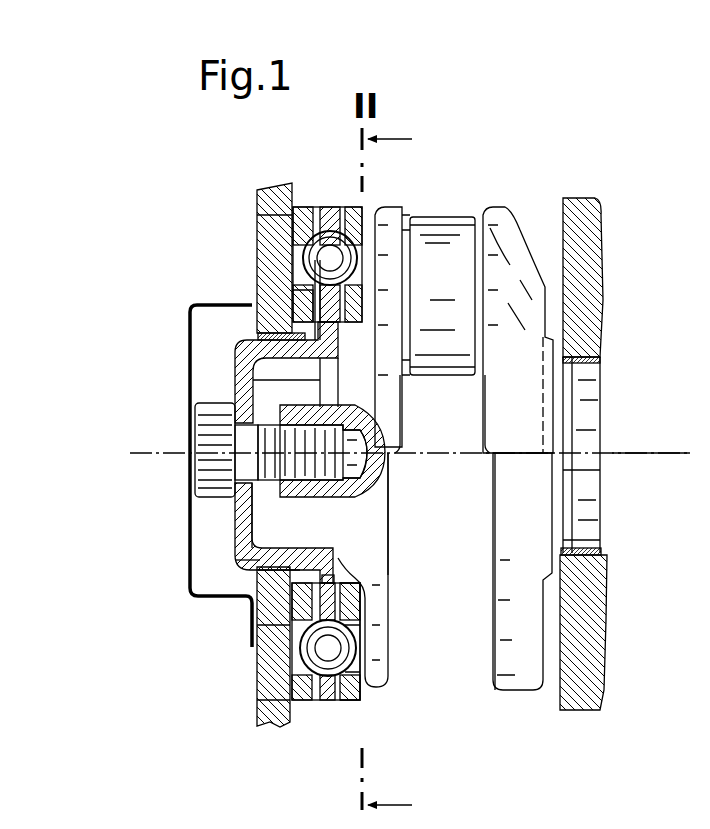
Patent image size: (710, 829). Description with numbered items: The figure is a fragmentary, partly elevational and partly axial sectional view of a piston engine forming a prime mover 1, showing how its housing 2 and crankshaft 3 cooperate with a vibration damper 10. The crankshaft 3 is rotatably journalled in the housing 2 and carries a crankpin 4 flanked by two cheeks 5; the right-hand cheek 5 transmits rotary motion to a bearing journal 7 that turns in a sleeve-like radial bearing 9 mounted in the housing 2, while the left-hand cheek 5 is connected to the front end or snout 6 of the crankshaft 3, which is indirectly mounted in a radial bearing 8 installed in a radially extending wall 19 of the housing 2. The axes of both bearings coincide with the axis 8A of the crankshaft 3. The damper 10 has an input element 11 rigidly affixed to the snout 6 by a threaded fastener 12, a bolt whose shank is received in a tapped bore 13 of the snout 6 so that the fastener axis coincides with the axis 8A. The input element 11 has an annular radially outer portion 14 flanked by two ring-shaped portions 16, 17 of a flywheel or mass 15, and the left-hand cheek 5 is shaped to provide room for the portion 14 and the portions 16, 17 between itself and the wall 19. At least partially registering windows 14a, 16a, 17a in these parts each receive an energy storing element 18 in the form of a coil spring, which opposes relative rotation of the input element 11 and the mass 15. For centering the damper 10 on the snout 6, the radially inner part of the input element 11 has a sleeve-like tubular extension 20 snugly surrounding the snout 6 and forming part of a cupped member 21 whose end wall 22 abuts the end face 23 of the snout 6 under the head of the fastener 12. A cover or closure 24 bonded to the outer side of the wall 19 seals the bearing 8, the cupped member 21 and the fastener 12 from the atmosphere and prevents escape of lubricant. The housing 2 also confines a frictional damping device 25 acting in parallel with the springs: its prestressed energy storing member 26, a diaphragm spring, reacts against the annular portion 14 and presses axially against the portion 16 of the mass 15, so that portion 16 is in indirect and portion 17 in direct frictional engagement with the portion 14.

The prime mover 1 is at (570, 146).
The housing 2 is at (268, 197).
The crankshaft 3 is at (588, 492).
The crankpin 4 is at (450, 232).
The cheek 5 is at (372, 327).
The snout 6 is at (282, 535).
The bearing journal 7 is at (580, 435).
The radial bearing 8 is at (268, 330).
The axis 8A is at (612, 453).
The radial bearing 9 is at (600, 553).
The vibration damper 10 is at (318, 192).
The input element 11 is at (357, 583).
The threaded fastener 12 is at (262, 452).
The tapped bore 13 is at (218, 463).
The radially outer portion 14 is at (327, 702).
The window 14a is at (363, 665).
The mass 15 is at (368, 692).
The portion of the mass 16 is at (300, 722).
The window 16a is at (262, 632).
The portion of the mass 17 is at (355, 703).
The window 17a is at (357, 628).
The energy storing element 18 is at (262, 705).
The radially extending wall 19 is at (268, 224).
The tubular extension 20 is at (262, 558).
The cupped member 21 is at (258, 350).
The end wall 22 is at (240, 525).
The end face 23 is at (237, 397).
The closure 24 is at (188, 336).
The frictional damping device 25 is at (305, 302).
The energy storing member 26 is at (272, 572).